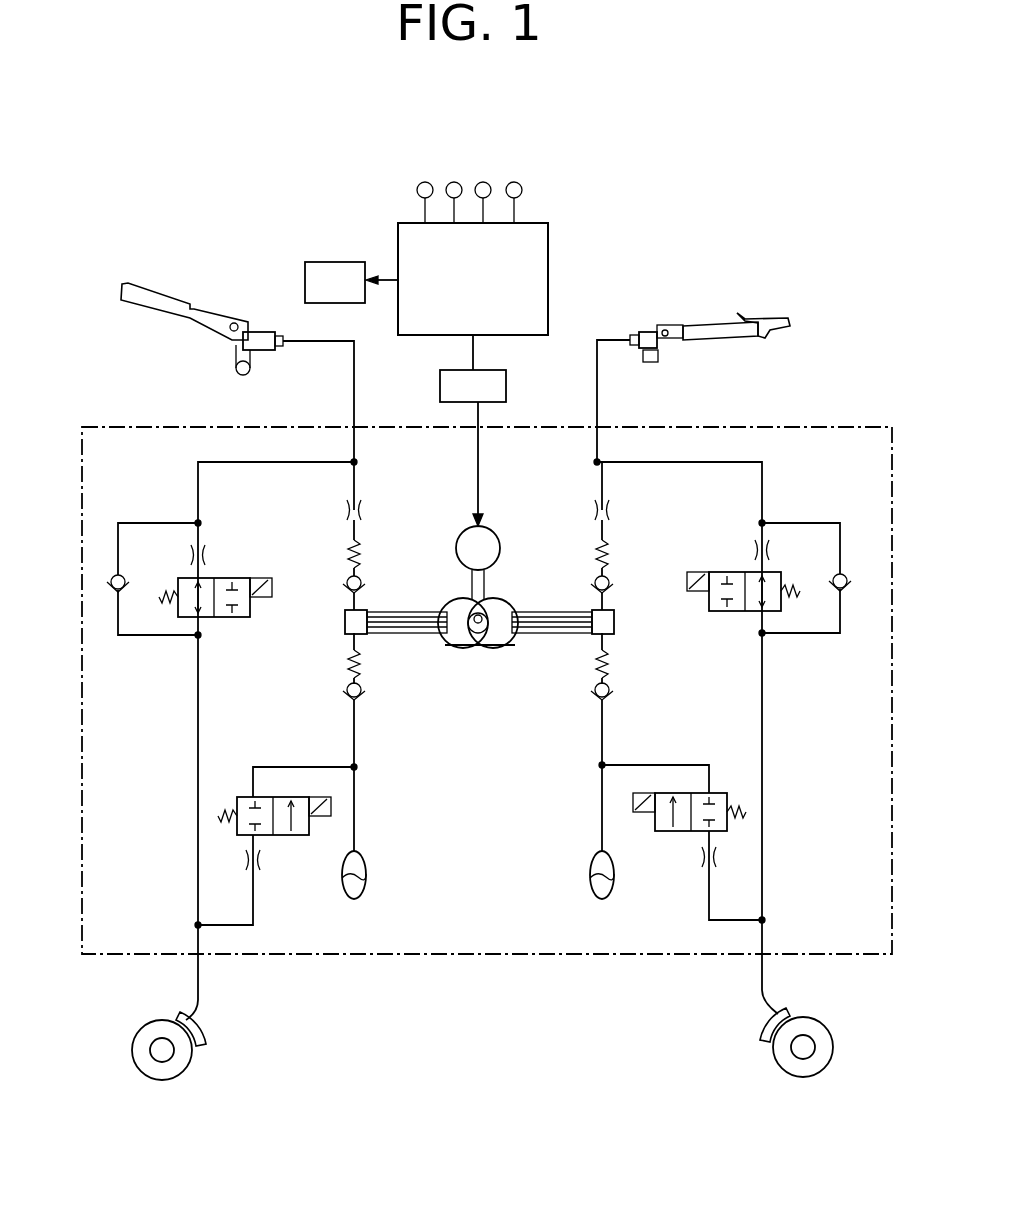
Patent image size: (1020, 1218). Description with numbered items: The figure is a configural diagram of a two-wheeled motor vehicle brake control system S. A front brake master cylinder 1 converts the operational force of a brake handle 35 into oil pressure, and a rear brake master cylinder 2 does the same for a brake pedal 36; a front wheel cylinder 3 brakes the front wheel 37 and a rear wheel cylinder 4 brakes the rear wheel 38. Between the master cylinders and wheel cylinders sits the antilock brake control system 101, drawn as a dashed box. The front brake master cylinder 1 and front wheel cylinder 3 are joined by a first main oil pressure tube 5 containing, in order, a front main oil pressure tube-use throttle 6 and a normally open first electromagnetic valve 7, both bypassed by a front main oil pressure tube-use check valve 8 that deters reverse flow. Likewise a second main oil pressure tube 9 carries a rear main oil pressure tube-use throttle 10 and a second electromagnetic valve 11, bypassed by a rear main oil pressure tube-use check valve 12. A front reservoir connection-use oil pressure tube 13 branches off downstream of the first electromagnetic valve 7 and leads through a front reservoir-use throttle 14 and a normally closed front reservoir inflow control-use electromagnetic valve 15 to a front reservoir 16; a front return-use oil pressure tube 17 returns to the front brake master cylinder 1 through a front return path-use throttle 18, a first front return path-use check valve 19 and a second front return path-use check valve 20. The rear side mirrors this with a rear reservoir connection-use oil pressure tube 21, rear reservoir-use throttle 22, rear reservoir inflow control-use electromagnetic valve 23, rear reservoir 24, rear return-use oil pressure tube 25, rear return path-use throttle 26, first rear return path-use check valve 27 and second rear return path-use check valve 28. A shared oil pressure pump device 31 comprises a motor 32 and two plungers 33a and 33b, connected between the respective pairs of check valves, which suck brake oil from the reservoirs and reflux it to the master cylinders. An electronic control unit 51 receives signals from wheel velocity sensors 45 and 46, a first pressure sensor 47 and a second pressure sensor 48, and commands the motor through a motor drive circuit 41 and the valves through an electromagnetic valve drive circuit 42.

The brake control system S is at (92, 358).
The antilock brake control system 101 is at (845, 425).
The front brake master cylinder 1 is at (258, 332).
The rear brake master cylinder 2 is at (640, 330).
The front wheel cylinder 3 is at (206, 1044).
The rear wheel cylinder 4 is at (776, 1036).
The first main oil pressure tube 5 is at (197, 733).
The front main oil pressure tube-use throttle 6 is at (206, 560).
The first electromagnetic valve 7 is at (212, 620).
The front main oil pressure tube-use check valve 8 is at (116, 572).
The second main oil pressure tube 9 is at (764, 724).
The rear main oil pressure tube-use throttle 10 is at (752, 554).
The second electromagnetic valve 11 is at (750, 614).
The rear main oil pressure tube-use check valve 12 is at (842, 572).
The front reservoir connection-use oil pressure tube 13 is at (262, 767).
The front reservoir-use throttle 14 is at (262, 862).
The front reservoir inflow control-use electromagnetic valve 15 is at (244, 797).
The front reservoir 16 is at (368, 868).
The front return-use oil pressure tube 17 is at (357, 733).
The front return path-use throttle 18 is at (346, 508).
The first front return path-use check valve 19 is at (346, 578).
The second front return path-use check valve 20 is at (346, 690).
The rear reservoir connection-use oil pressure tube 21 is at (660, 765).
The rear reservoir-use throttle 22 is at (704, 860).
The rear reservoir inflow control-use electromagnetic valve 23 is at (720, 793).
The rear reservoir 24 is at (590, 875).
The rear return-use oil pressure tube 25 is at (597, 734).
The rear return path-use throttle 26 is at (594, 510).
The first rear return path-use check valve 27 is at (612, 580).
The second rear return path-use check valve 28 is at (594, 690).
The oil pressure pump device 31 is at (436, 530).
The motor 32 is at (490, 528).
The plunger 33a is at (400, 610).
The plunger 33b is at (540, 610).
The brake handle 35 is at (158, 300).
The brake pedal 36 is at (782, 320).
The front wheel 37 is at (133, 1046).
The rear wheel 38 is at (830, 1046).
The motor drive circuit 41 is at (506, 388).
The electromagnetic valve drive circuit 42 is at (312, 262).
The wheel velocity sensor 45 is at (425, 182).
The wheel velocity sensor 46 is at (454, 182).
The first pressure sensor 47 is at (483, 182).
The second pressure sensor 48 is at (514, 182).
The electronic control unit 51 is at (548, 237).